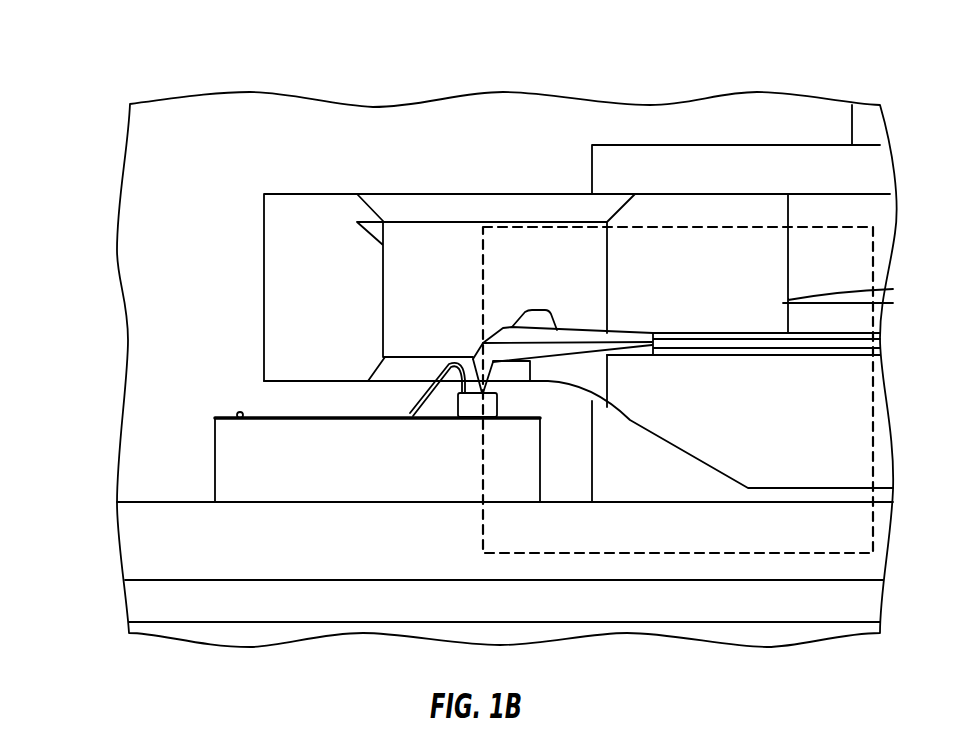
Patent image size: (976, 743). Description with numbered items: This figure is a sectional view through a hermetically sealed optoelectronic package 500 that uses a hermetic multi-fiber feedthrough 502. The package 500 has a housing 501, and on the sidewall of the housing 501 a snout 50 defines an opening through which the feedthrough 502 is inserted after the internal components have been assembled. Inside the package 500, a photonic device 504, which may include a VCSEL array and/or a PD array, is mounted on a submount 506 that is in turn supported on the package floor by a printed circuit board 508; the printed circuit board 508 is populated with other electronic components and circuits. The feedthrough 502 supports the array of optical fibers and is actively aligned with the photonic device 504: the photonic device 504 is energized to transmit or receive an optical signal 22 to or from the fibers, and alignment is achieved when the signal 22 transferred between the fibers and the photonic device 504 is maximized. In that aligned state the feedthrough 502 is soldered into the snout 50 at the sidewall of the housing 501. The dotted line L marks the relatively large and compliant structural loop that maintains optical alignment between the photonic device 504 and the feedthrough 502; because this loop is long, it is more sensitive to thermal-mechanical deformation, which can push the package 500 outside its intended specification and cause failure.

The hermetically sealed optoelectronic package 500 is at (119, 69).
The hermetic multi-fiber feedthrough 502 is at (278, 293).
The snout 50 is at (870, 173).
The optical signal 22 is at (505, 328).
The photonic device 504 is at (497, 405).
The submount 506 is at (428, 488).
The printed circuit board 508 is at (218, 558).
The housing 501 is at (697, 608).
The structural loop L is at (875, 430).